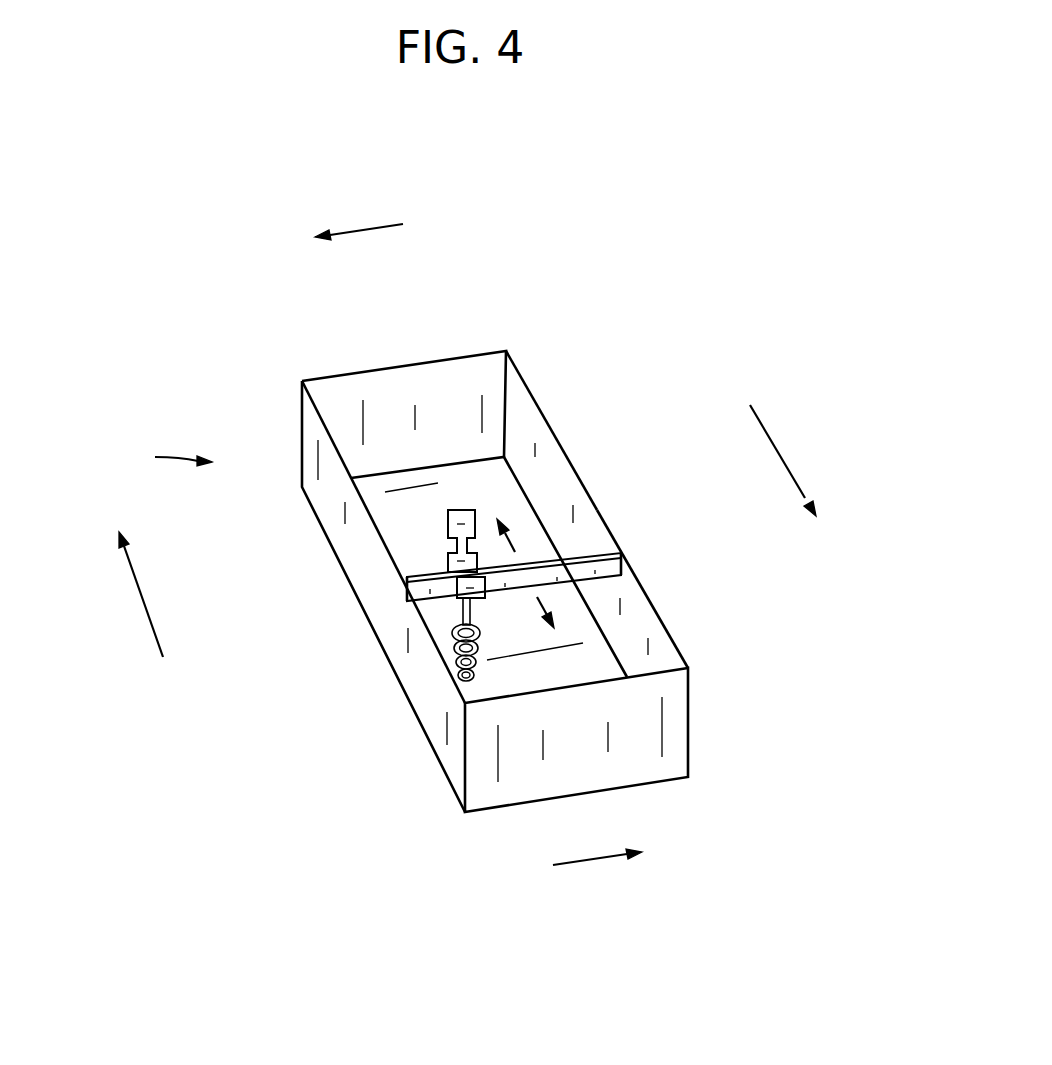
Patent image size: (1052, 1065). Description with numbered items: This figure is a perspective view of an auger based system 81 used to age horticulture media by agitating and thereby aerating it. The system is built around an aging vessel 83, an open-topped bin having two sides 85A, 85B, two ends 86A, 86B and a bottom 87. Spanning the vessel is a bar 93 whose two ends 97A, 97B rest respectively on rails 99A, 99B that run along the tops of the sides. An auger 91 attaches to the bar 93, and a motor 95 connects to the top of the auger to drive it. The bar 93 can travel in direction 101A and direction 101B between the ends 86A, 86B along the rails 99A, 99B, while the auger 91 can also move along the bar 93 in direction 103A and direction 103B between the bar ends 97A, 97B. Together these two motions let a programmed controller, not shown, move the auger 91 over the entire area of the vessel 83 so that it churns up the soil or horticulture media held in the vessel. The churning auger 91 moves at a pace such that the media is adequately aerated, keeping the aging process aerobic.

The auger based system 81 is at (169, 457).
The aging vessel 83 is at (481, 333).
The side 85A is at (565, 487).
The side 85B is at (408, 662).
The end 86A is at (383, 380).
The end 86B is at (648, 760).
The bottom 87 is at (425, 476).
The auger 91 is at (455, 630).
The bar 93 is at (582, 555).
The motor 95 is at (448, 518).
The end of bar 97A is at (636, 549).
The end of bar 97B is at (395, 578).
The rail 99A is at (663, 613).
The rail 99B is at (320, 428).
The direction 101A is at (768, 433).
The direction 101B is at (140, 595).
The direction 103A is at (600, 865).
The direction 103B is at (376, 226).